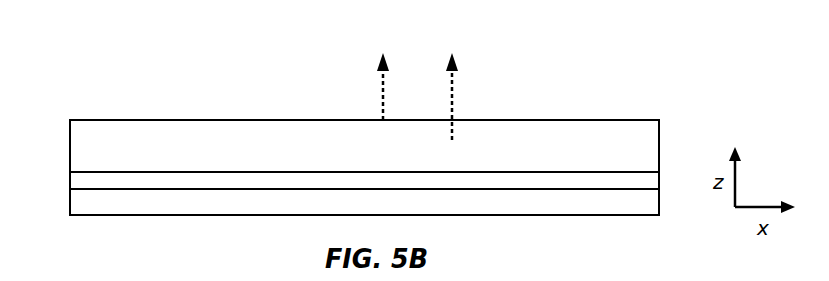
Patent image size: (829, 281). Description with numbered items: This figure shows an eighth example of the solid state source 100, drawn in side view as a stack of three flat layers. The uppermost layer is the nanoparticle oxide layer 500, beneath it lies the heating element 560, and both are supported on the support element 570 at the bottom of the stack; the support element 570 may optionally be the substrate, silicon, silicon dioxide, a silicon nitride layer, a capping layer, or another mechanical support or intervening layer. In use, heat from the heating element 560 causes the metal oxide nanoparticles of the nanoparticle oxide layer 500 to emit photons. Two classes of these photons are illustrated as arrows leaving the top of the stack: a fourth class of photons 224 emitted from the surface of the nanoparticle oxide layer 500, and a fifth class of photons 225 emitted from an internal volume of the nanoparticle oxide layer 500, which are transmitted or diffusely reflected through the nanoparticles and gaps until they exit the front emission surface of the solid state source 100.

The solid state source 100 is at (379, 141).
The nanoparticle oxide layer 500 is at (659, 142).
The heating element 560 is at (659, 182).
The support element 570 is at (70, 202).
The fourth class of photons 224 is at (382, 78).
The fifth class of photons 225 is at (453, 78).